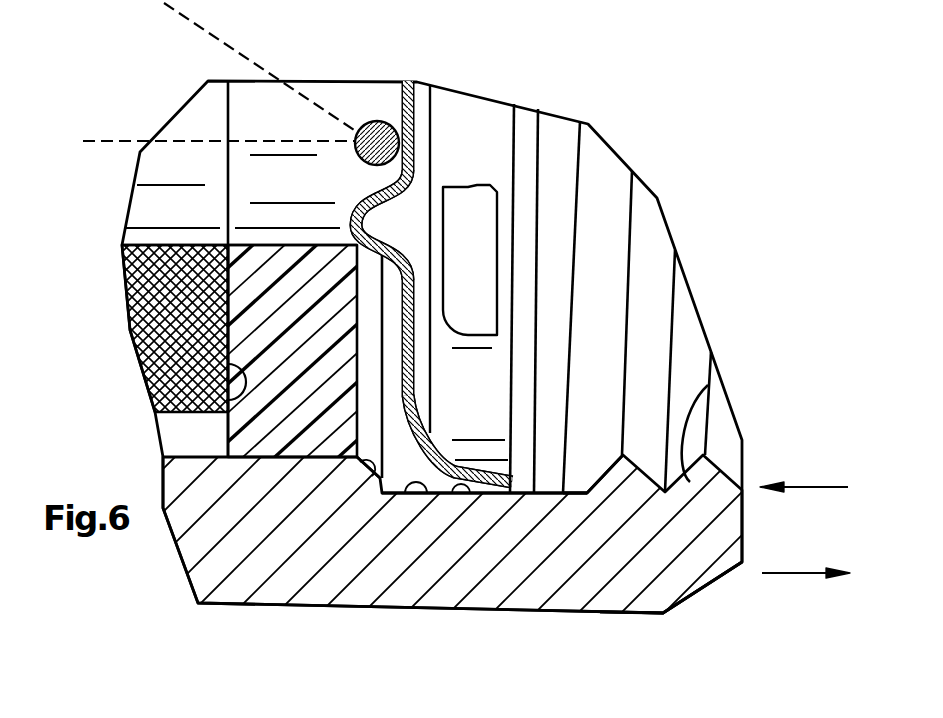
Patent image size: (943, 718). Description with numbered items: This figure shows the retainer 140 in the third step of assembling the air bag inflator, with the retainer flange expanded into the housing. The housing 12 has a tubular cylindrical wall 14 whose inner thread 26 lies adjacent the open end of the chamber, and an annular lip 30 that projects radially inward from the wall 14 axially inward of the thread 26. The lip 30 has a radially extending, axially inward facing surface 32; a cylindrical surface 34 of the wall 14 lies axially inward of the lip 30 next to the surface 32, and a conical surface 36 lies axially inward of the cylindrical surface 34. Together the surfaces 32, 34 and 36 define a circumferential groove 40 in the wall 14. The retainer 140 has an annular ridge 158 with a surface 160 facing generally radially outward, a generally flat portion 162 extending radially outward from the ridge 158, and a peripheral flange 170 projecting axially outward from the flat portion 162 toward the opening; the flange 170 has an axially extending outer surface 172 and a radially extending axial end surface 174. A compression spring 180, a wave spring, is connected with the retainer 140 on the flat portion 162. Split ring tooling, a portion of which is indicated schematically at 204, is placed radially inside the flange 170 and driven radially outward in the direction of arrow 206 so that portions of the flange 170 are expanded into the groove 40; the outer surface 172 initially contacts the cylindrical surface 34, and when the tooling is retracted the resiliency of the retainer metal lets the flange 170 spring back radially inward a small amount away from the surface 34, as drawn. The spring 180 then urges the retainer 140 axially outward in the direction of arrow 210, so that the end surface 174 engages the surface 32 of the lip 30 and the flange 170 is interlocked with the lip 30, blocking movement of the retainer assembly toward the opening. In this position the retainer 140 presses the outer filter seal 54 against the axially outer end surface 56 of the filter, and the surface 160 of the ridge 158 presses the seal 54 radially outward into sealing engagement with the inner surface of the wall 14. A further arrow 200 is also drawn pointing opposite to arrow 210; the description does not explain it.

The housing 12 is at (666, 612).
The tubular cylindrical wall 14 is at (620, 613).
The inner thread 26 is at (708, 395).
The annular lip 30 is at (533, 458).
The radially extending axially inward facing surface 32 is at (495, 482).
The cylindrical surface 34 is at (413, 487).
The conical surface 36 is at (371, 476).
The circumferential groove 40 is at (450, 487).
The outer filter seal 54 is at (265, 430).
The axially outer end surface 56 is at (215, 400).
The retainer 140 is at (400, 97).
The annular ridge 158 is at (350, 228).
The surface 160 is at (362, 262).
The generally flat portion 162 is at (469, 232).
The peripheral flange 170 is at (477, 455).
The axially extending outer surface 172 is at (472, 404).
The radially extending axial end surface 174 is at (505, 481).
The compression spring 180 is at (200, 140).
The pressure direction 200 is at (804, 475).
The tooling 204 is at (497, 237).
The arrow 206 is at (472, 284).
The arrow 210 is at (806, 561).